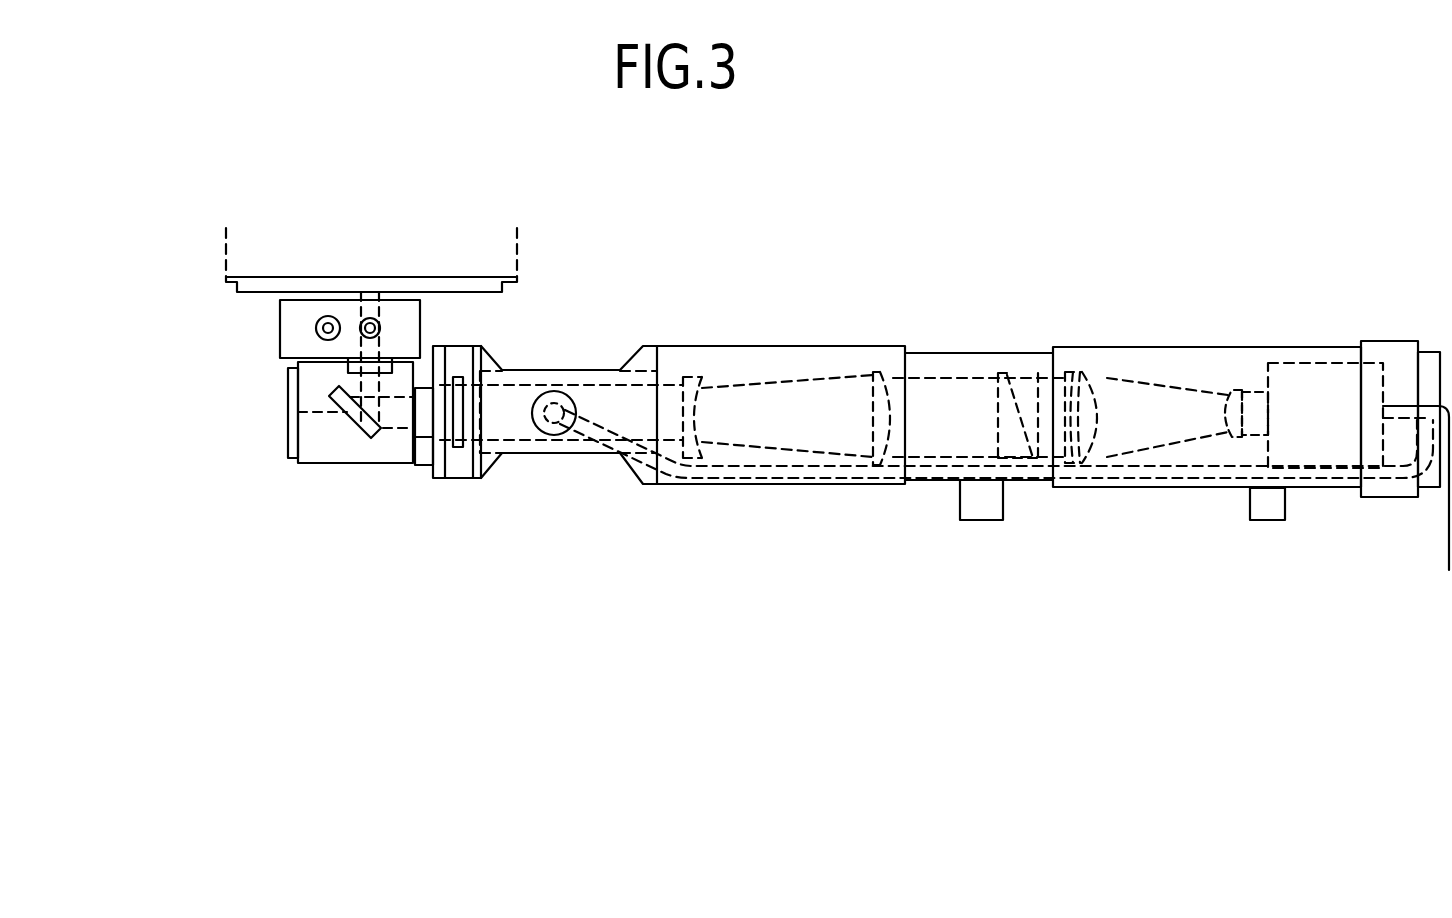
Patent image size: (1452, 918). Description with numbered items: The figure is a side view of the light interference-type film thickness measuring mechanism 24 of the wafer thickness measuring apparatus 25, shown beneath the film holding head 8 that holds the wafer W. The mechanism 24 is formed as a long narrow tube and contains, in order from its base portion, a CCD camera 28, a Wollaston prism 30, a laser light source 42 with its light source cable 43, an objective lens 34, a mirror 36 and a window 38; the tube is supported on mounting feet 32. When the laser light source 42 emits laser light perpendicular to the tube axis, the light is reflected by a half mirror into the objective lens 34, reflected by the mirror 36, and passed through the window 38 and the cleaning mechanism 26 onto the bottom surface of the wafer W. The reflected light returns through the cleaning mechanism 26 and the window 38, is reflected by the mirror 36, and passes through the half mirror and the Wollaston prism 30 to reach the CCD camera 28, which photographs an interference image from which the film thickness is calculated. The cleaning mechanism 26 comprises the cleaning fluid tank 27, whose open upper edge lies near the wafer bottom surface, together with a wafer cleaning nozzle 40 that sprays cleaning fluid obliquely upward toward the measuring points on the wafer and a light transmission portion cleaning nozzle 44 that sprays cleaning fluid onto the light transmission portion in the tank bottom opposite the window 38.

The film holding head 8 is at (517, 253).
The wafer W is at (470, 292).
The light interference-type film thickness measuring mechanism 24 is at (808, 336).
The wafer thickness measuring apparatus 25 is at (913, 310).
The cleaning mechanism 26 is at (262, 334).
The cleaning fluid tank 27 is at (280, 318).
The CCD camera 28 is at (1300, 362).
The Wollaston prism 30 is at (1027, 372).
The mounting bracket 32 is at (1003, 502).
The objective lens 34 is at (412, 440).
The mirror 36 is at (352, 422).
The window 38 is at (347, 366).
The wafer cleaning nozzle 40 is at (318, 334).
The laser light source 42 is at (563, 392).
The light source cable 43 is at (723, 486).
The light transmission portion cleaning nozzle 44 is at (378, 326).